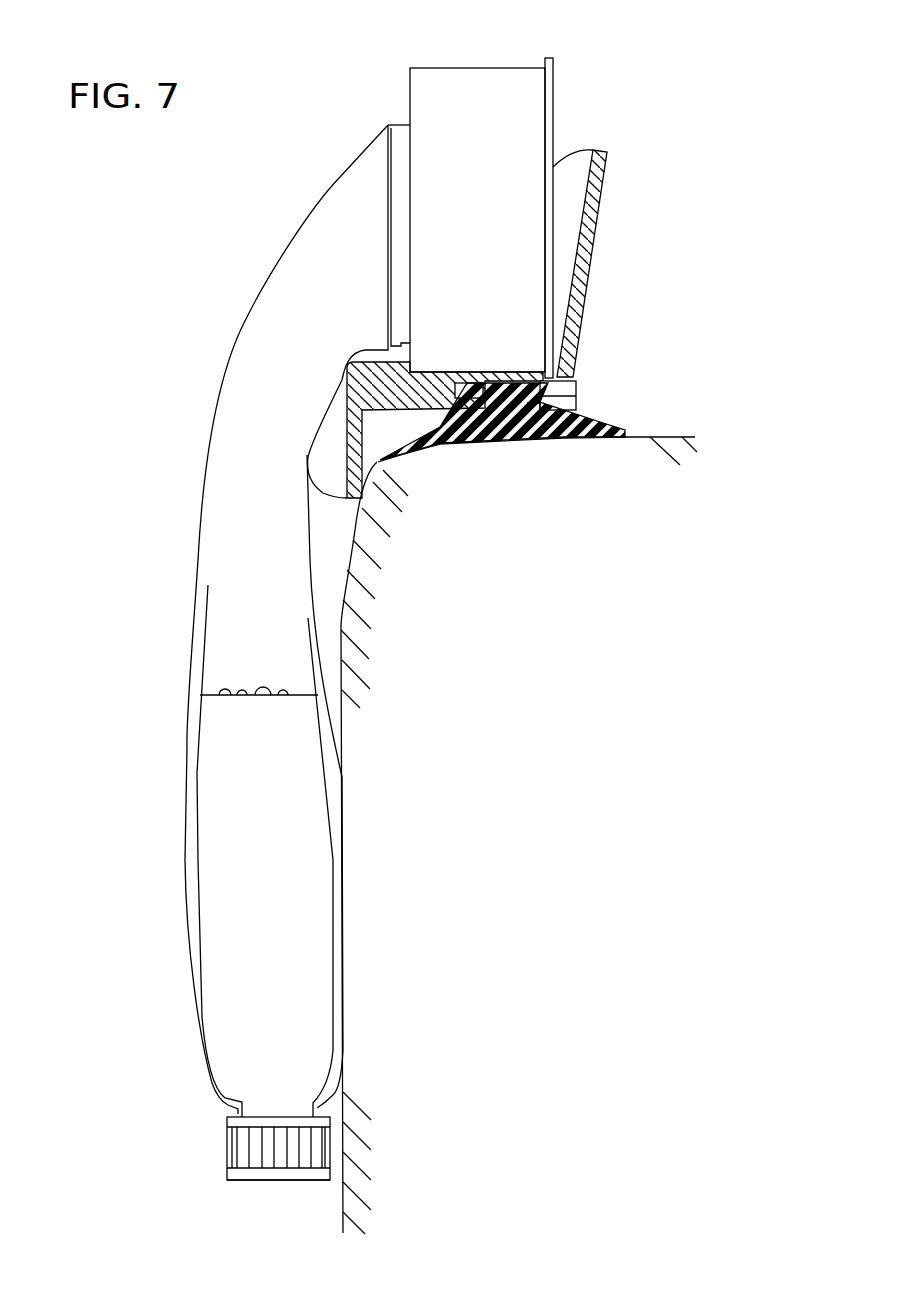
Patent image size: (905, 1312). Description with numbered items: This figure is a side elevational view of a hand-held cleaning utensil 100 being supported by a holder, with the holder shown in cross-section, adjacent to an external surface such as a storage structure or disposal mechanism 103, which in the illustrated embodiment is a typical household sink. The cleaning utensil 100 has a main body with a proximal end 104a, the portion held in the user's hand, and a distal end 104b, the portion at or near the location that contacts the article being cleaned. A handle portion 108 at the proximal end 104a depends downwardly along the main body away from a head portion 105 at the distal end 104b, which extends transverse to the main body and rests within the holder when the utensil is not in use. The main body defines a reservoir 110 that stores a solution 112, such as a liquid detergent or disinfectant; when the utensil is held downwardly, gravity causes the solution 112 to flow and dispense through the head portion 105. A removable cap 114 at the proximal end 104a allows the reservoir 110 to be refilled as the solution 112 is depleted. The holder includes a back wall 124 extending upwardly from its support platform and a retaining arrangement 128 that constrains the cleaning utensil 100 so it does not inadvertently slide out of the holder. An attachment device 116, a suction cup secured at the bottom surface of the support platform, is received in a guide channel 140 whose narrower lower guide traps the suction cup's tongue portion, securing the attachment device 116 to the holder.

The hand-held cleaning utensil 100 is at (287, 243).
The storage structure or disposal mechanism 103 is at (600, 579).
The proximal end 104a is at (268, 1180).
The distal end 104b is at (550, 58).
The head portion 105 is at (487, 120).
The handle portion 108 is at (185, 877).
The reservoir 110 is at (197, 775).
The solution 112 is at (237, 960).
The removable cap 114 is at (247, 1143).
The attachment device (suction cup) 116 is at (602, 425).
The back wall 124 is at (592, 245).
The retaining arrangement 128 is at (403, 383).
The guide channel 140 is at (565, 392).